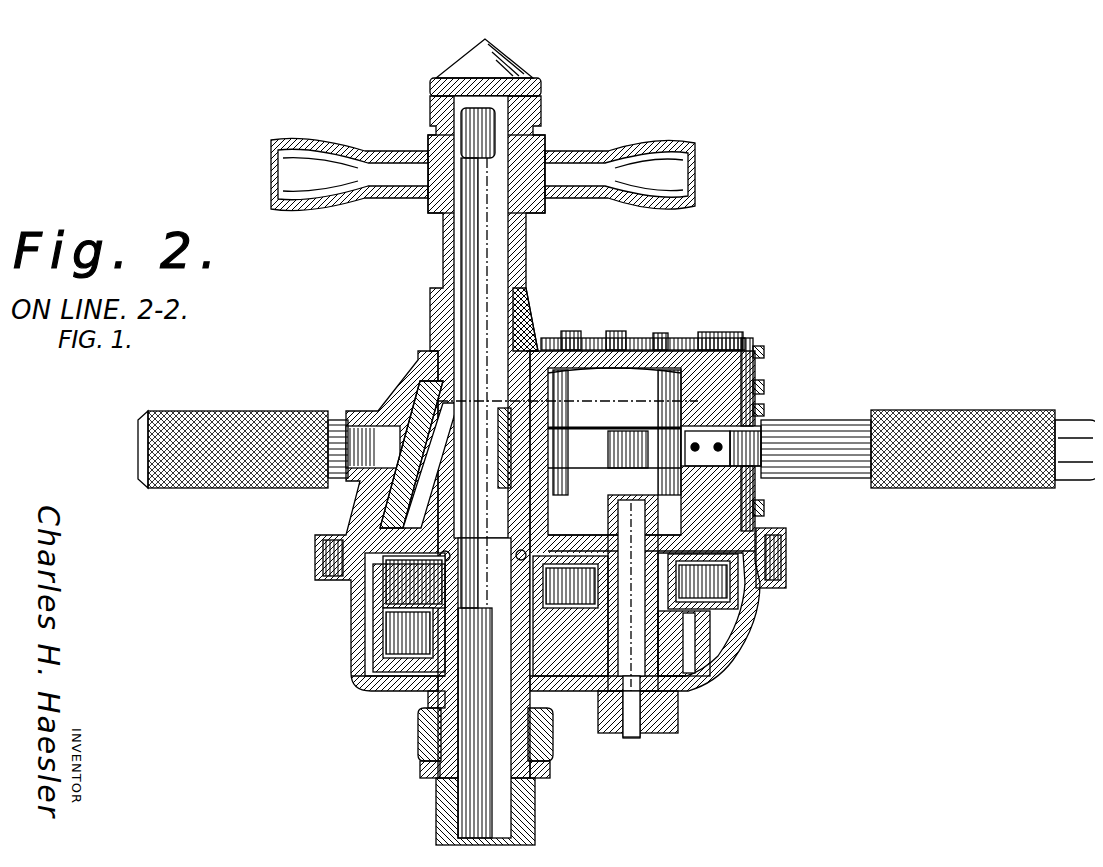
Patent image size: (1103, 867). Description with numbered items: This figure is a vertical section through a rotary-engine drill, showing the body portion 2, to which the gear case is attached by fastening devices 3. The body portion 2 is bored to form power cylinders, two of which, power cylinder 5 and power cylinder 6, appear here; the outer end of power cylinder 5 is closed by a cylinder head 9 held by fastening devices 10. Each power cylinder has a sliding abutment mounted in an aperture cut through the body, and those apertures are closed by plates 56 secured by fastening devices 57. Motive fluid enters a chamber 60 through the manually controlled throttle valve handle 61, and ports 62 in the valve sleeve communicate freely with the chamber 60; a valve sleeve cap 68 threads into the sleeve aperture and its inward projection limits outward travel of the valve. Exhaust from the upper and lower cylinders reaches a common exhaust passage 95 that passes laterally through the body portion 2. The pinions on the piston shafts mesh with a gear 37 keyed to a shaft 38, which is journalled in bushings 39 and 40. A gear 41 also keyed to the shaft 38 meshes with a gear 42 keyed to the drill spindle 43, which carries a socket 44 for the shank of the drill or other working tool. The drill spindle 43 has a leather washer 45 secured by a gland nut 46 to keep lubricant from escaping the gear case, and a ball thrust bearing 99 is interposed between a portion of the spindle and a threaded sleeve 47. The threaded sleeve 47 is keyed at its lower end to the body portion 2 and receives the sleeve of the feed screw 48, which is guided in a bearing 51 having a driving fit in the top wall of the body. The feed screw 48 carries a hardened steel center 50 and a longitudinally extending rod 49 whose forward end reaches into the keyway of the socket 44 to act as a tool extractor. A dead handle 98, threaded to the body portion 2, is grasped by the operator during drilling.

The body portion 2 is at (352, 495).
The fastening devices 3 is at (330, 397).
The power cylinder 5 is at (614, 428).
The power cylinder 6 is at (578, 518).
The cylinder head 9 is at (562, 328).
The fastening devices 10 is at (655, 330).
The gear 37 is at (718, 588).
The shaft 38 is at (630, 650).
The bushing 39 is at (608, 494).
The bushing 40 is at (672, 700).
The gear 41 is at (690, 633).
The gear 42 is at (395, 635).
The drill spindle 43 is at (420, 700).
The socket 44 is at (465, 780).
The leather washer 45 is at (410, 736).
The gland nut 46 is at (413, 754).
The threaded sleeve 47 is at (521, 283).
The feed screw 48 is at (312, 143).
The longitudinally extending rod 49 is at (475, 115).
The hardened steel center 50 is at (470, 54).
The bearing 51 is at (421, 310).
The plates 56 is at (746, 333).
The fastening devices 57 is at (756, 359).
The chamber 60 is at (614, 449).
The throttle valve handle 61 is at (922, 407).
The ports 62 is at (703, 428).
The valve sleeve cap 68 is at (697, 326).
The common exhaust passage 95 is at (640, 423).
The dead handle 98 is at (242, 481).
The ball thrust bearing 99 is at (430, 551).